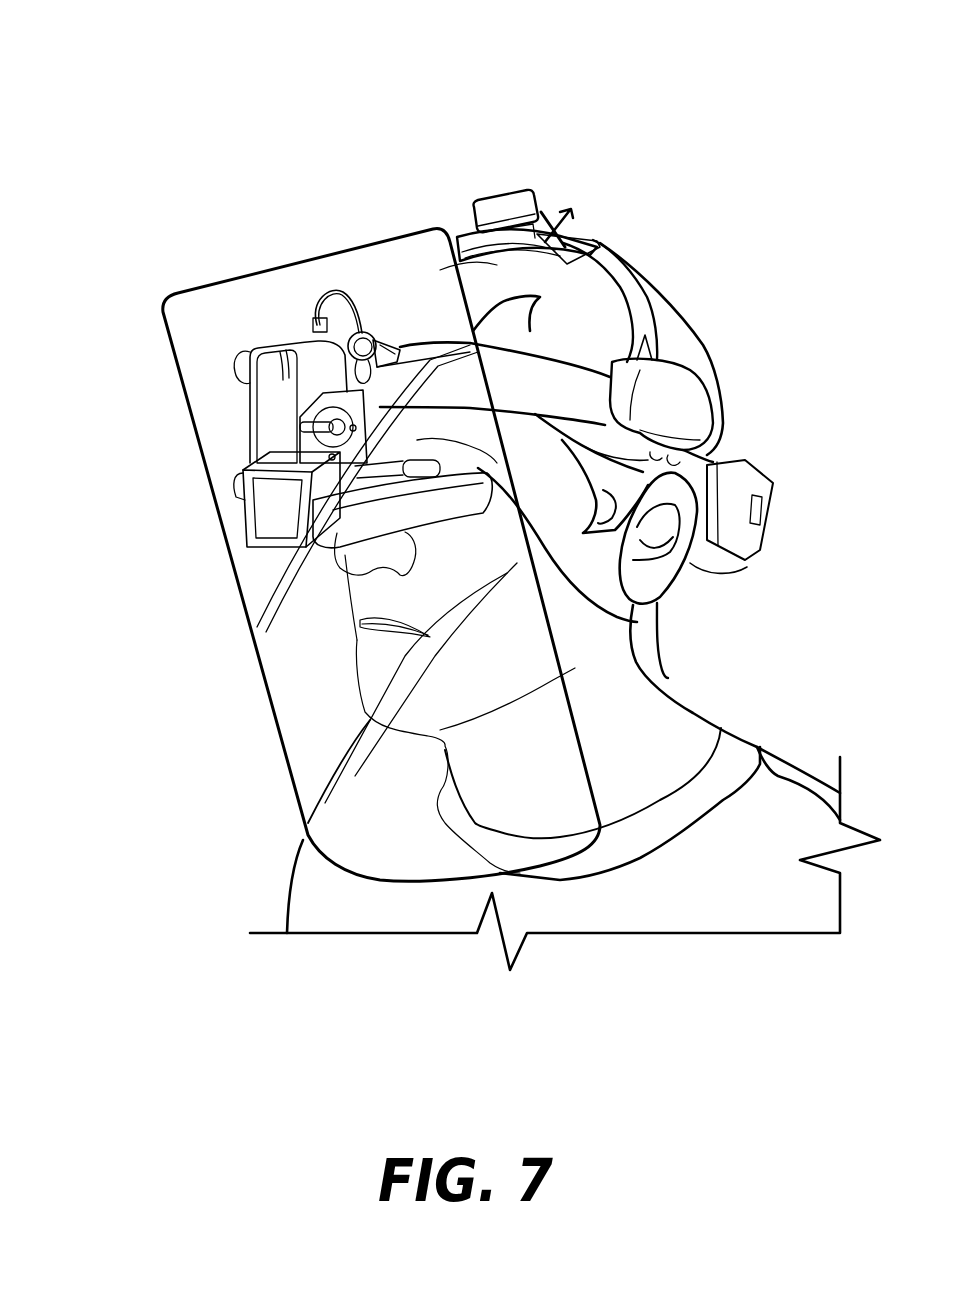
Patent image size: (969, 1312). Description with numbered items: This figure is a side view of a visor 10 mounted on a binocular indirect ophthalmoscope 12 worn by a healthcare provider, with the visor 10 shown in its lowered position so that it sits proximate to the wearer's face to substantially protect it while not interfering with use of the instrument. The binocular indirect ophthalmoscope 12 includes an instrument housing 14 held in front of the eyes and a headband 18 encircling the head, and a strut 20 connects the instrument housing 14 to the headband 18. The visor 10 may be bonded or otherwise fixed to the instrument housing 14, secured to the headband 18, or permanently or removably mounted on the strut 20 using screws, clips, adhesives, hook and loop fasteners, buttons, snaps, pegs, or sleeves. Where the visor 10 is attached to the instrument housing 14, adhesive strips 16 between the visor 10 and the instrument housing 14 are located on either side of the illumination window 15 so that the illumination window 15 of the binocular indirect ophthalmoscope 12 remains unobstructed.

The visor 10 is at (297, 662).
The binocular indirect ophthalmoscope 12 is at (697, 405).
The instrument housing 14 is at (633, 627).
The illumination window 15 is at (285, 502).
The adhesive strips 16 is at (240, 532).
The headband 18 is at (557, 380).
The strut 20 is at (367, 345).